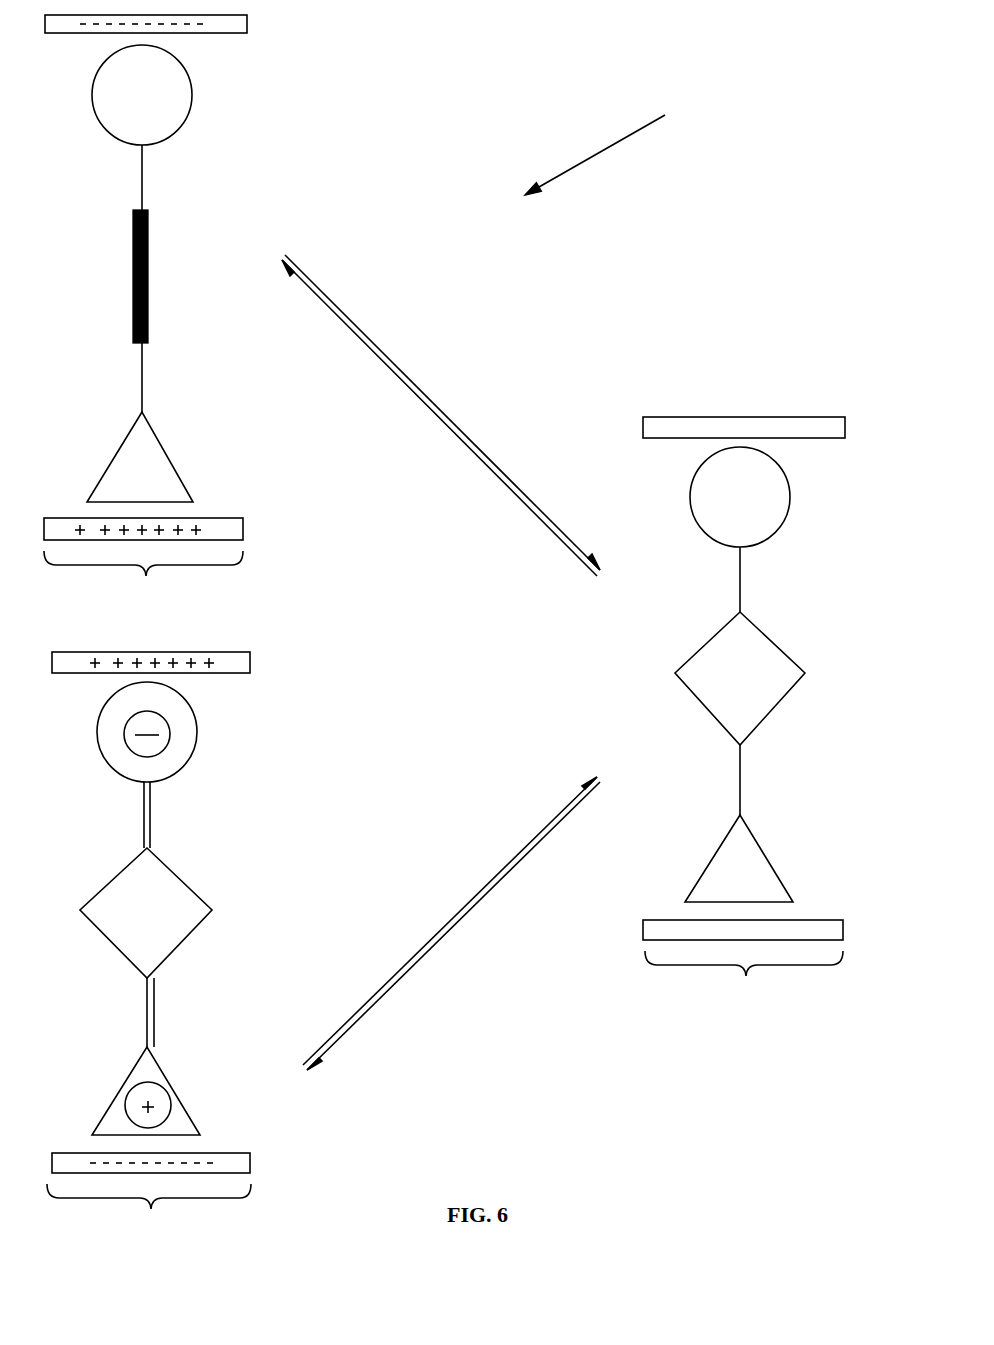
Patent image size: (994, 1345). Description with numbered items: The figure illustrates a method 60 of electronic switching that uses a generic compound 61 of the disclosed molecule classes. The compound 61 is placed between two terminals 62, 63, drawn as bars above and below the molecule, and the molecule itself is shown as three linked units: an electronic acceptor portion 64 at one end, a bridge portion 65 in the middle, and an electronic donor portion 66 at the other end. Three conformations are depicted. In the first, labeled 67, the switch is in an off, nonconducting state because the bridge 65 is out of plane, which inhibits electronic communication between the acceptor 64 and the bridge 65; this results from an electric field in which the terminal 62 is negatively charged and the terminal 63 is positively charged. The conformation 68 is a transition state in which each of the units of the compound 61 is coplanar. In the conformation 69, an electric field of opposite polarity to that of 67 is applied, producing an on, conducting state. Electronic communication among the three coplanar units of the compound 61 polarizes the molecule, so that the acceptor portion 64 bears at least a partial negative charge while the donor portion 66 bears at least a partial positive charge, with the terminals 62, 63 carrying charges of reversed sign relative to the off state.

The method of electronic switching 60 is at (617, 146).
The generic compound 61 is at (140, 178).
The terminal 62 is at (255, 28).
The terminal 63 is at (255, 533).
The electronic acceptor portion 64 is at (207, 103).
The bridge portion 65 is at (173, 278).
The electronic donor portion 66 is at (195, 468).
The off state 67 is at (143, 582).
The transition state 68 is at (744, 980).
The on state 69 is at (149, 1215).